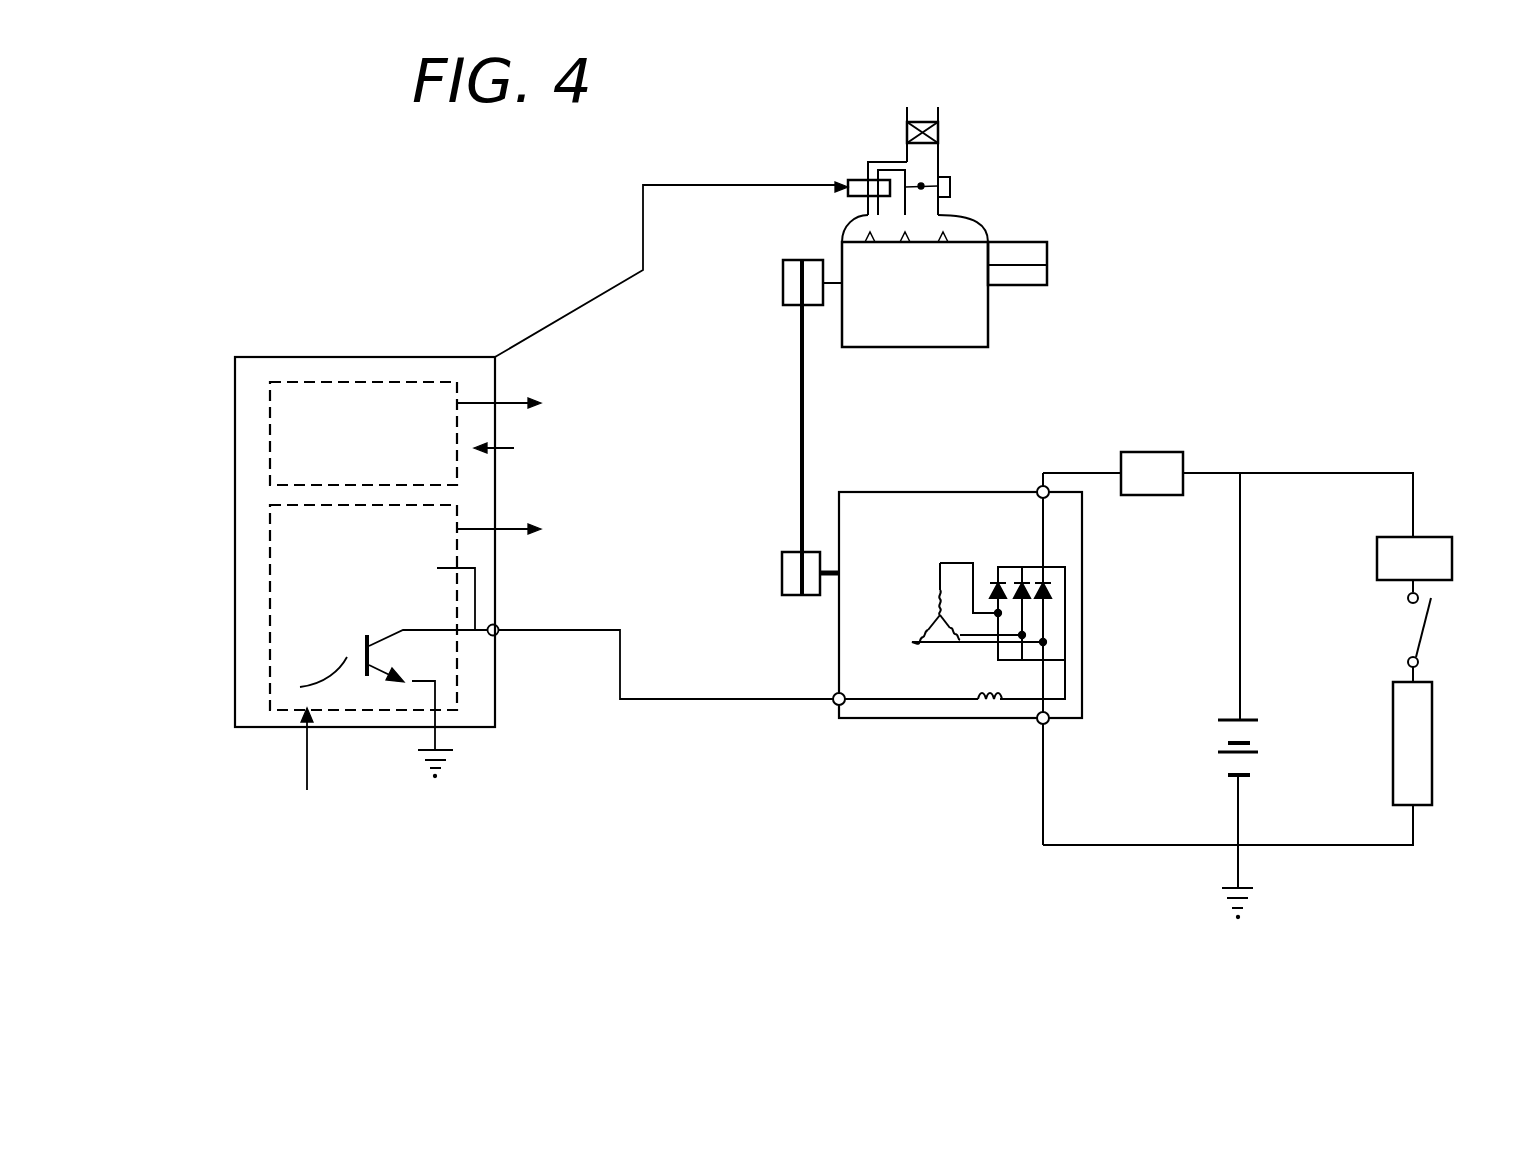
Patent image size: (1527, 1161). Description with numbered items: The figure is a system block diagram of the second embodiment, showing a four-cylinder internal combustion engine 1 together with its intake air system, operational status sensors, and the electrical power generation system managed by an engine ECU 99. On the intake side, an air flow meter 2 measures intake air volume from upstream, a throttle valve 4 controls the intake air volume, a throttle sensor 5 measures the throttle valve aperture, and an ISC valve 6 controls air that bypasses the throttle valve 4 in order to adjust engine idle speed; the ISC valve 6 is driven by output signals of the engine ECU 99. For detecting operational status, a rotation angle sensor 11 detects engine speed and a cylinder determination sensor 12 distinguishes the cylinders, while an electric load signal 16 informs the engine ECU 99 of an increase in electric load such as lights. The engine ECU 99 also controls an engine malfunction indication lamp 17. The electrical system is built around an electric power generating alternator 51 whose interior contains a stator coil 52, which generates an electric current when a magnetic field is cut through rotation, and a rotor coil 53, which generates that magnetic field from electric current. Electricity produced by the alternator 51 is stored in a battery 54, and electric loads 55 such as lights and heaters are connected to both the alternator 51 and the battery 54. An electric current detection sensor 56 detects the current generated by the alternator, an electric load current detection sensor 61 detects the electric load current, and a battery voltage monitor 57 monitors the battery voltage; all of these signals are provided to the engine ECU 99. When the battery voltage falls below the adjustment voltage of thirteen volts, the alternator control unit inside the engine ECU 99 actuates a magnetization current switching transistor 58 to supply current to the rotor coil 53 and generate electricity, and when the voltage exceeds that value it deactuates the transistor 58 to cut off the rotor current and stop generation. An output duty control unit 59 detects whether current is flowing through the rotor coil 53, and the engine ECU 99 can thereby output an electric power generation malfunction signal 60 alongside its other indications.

The four-cylinder internal combustion engine 1 is at (988, 315).
The air flow meter 2 is at (938, 132).
The throttle valve 4 is at (921, 192).
The throttle sensor 5 is at (951, 186).
The ISC valve 6 is at (858, 180).
The rotation angle sensor 11 is at (1022, 242).
The cylinder determination sensor 12 is at (1025, 285).
The electric load signal 16 is at (593, 451).
The engine malfunction indication lamp 17 is at (612, 406).
The electric power generating alternator 51 is at (918, 492).
The stator coil 52 is at (915, 617).
The rotor coil 53 is at (992, 712).
The battery 54 is at (1250, 713).
The electric loads 55 is at (1432, 745).
The electric current detection sensor 56 is at (1157, 452).
The battery voltage monitor 57 is at (393, 764).
The magnetization current switching transistor 58 is at (300, 687).
The output duty control unit 59 is at (376, 592).
The electric power generation malfunction signal 60 is at (582, 545).
The electric load current detection sensor 61 is at (1425, 537).
The engine ECU 99 is at (255, 727).